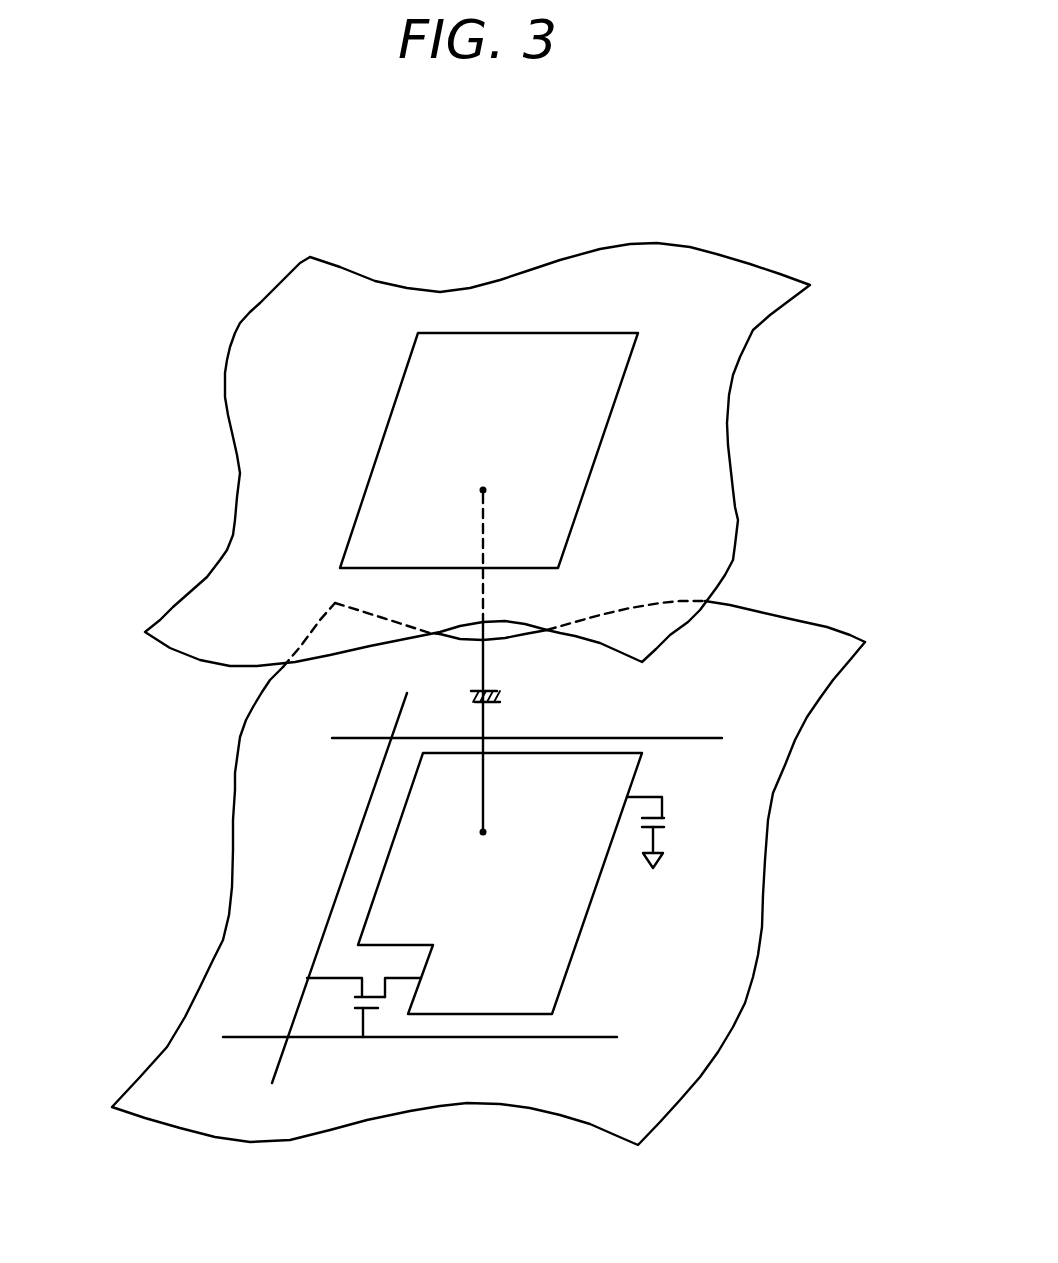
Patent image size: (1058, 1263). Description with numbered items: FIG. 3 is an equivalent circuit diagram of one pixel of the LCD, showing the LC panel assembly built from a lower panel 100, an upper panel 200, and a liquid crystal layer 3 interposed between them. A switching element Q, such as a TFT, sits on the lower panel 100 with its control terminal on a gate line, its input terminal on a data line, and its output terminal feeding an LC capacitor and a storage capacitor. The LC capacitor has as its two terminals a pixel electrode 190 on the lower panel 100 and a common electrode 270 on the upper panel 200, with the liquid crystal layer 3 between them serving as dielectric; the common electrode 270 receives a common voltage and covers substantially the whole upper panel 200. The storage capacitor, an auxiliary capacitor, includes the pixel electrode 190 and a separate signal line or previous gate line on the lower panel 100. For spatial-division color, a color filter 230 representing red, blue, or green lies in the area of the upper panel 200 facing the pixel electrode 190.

The liquid crystal layer 3 is at (140, 755).
The lower panel 100 is at (507, 816).
The pixel electrode 190 is at (580, 940).
The upper panel 200 is at (507, 454).
The color filter 230 is at (572, 522).
The common electrode 270 is at (731, 420).